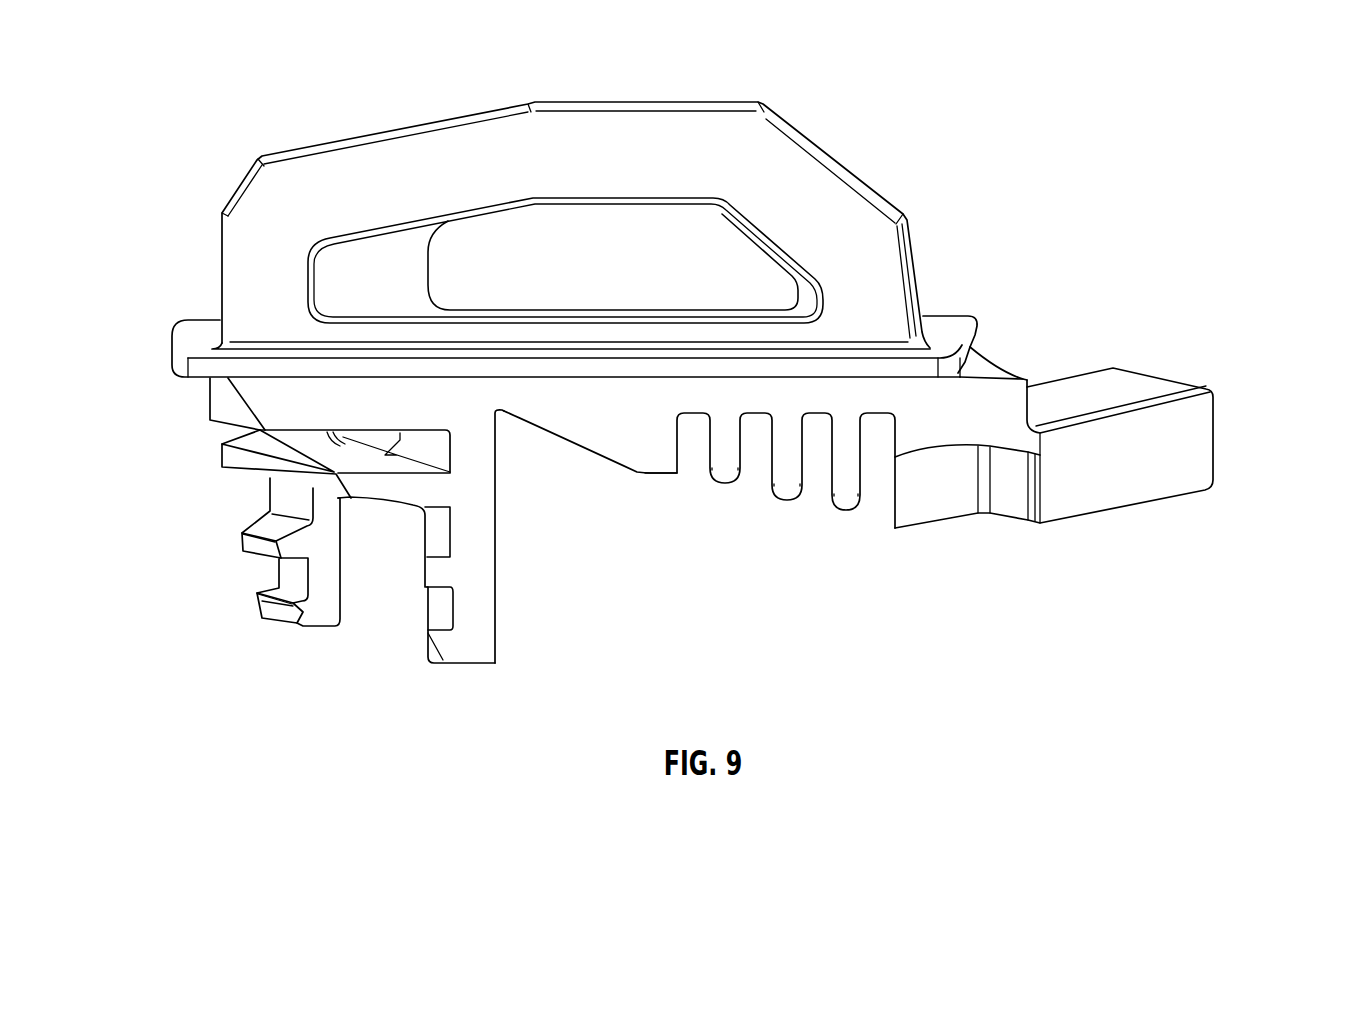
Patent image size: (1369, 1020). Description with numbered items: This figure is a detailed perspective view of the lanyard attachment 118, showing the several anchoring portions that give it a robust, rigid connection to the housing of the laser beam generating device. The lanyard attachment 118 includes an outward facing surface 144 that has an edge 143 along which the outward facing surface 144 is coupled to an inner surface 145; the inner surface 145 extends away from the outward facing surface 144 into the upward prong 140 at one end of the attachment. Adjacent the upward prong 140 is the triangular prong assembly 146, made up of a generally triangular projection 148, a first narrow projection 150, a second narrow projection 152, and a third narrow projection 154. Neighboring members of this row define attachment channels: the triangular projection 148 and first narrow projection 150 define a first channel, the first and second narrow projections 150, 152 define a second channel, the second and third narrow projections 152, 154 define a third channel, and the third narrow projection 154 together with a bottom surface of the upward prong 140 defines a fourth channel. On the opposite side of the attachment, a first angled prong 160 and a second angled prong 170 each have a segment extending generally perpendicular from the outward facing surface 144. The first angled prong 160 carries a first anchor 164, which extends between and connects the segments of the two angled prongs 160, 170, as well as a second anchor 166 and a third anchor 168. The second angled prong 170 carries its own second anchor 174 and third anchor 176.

The lanyard attachment 118 is at (192, 140).
The upward prong 140 is at (830, 515).
The edge 143 is at (193, 372).
The outward facing surface 144 is at (950, 328).
The inner surface 145 is at (1002, 372).
The triangular prong assembly 146 is at (707, 529).
The generally triangular projection 148 is at (655, 476).
The first narrow projection 150 is at (728, 471).
The second narrow projection 152 is at (786, 503).
The third narrow projection 154 is at (852, 511).
The first angled prong 160 is at (299, 568).
The first anchor 164 is at (360, 492).
The second anchor 166 is at (448, 570).
The third anchor 168 is at (450, 643).
The second angled prong 170 is at (244, 595).
The second anchor 174 is at (243, 533).
The third anchor 176 is at (272, 606).